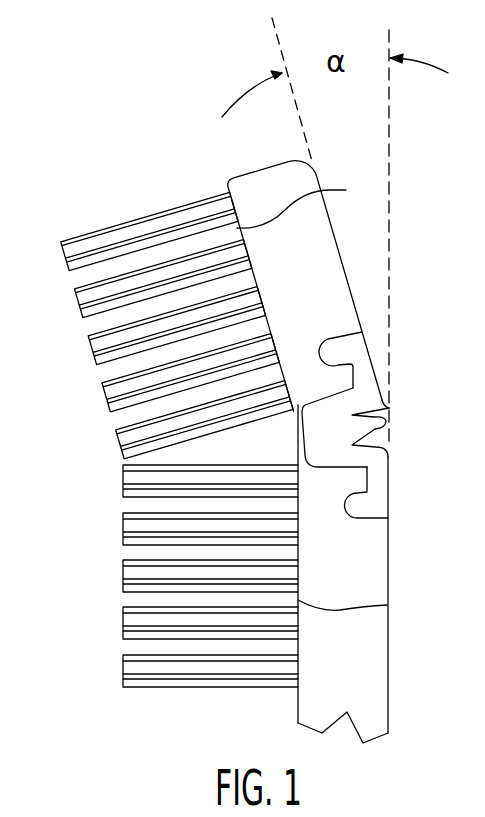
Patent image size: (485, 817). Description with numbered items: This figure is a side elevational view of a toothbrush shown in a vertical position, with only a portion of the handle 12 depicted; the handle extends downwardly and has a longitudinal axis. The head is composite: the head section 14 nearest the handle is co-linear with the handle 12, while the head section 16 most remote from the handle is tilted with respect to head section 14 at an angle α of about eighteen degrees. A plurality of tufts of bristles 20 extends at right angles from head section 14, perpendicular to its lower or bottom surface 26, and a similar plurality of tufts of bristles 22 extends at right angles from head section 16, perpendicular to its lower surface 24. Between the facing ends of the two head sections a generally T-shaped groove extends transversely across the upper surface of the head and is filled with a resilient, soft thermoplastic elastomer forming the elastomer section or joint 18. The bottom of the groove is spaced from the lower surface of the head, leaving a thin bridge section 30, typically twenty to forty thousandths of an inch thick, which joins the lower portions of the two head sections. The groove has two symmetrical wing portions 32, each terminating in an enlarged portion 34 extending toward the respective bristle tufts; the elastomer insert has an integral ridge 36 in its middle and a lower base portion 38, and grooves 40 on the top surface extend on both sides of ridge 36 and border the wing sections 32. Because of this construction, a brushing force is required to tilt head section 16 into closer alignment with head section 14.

The handle 12 is at (378, 688).
The head section 14 is at (362, 594).
The head section 16 is at (317, 290).
The elastomer section 18 is at (431, 307).
The tufts of bristles 20 is at (135, 526).
The tufts of bristles 22 is at (107, 237).
The lower surface 24 is at (306, 203).
The lower or bottom surface 26 is at (387, 605).
The bridge section 30 is at (305, 440).
The wing portions 32 is at (363, 360).
The enlarged portion 34 is at (322, 338).
The ridge 36 is at (382, 434).
The base portion 38 is at (328, 457).
The grooves 40 is at (389, 408).